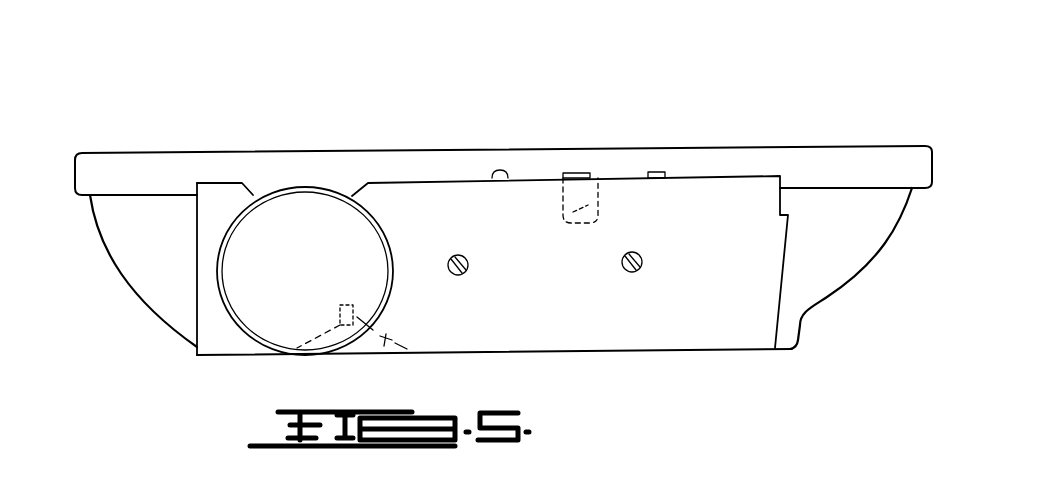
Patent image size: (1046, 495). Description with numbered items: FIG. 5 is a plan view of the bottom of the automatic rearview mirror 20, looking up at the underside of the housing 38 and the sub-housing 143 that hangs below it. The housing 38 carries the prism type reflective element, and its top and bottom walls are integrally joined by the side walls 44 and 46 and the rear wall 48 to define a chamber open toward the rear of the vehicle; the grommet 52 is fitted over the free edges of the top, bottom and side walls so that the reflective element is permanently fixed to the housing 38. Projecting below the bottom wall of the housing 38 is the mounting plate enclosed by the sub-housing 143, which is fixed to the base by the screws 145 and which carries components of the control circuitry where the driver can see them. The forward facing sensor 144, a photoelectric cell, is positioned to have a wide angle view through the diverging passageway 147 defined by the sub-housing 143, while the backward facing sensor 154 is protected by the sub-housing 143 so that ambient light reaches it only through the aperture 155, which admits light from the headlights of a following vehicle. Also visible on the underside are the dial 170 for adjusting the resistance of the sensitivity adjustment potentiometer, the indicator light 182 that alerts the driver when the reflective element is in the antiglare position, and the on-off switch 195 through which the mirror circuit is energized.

The automatic rearview mirror 20 is at (808, 344).
The housing 38 is at (838, 262).
The side wall 44 is at (133, 297).
The side wall 46 is at (893, 242).
The rear wall 48 is at (655, 352).
The grommet 52 is at (907, 150).
The sub-housing 143 is at (232, 338).
The forward facing sensor 144 is at (348, 305).
The screws 145 is at (468, 265).
The diverging passageway 147 is at (367, 352).
The backward facing sensor 154 is at (598, 200).
The aperture 155 is at (598, 178).
The dial 170 is at (302, 187).
The indicator light 182 is at (507, 172).
The on-off switch 195 is at (660, 171).